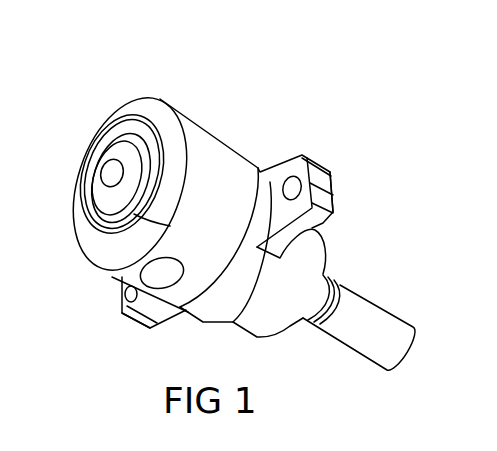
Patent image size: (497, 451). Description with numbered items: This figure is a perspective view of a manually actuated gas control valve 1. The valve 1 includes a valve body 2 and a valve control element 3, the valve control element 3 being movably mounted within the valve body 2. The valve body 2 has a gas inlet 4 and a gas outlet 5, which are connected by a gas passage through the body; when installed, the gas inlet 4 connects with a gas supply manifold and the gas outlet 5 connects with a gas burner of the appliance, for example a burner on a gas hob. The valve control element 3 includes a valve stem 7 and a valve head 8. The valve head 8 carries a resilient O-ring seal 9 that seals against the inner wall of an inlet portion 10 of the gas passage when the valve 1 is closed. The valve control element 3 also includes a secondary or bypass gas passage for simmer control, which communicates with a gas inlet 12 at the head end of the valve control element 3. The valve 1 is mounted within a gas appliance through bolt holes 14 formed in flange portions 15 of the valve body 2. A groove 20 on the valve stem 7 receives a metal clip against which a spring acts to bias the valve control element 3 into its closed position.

The manually actuated gas control valve 1 is at (163, 72).
The valve body 2 is at (212, 143).
The valve control element 3 is at (307, 352).
The gas inlet 4 is at (112, 123).
The gas outlet 5 is at (158, 272).
The valve stem 7 is at (384, 326).
The valve head 8 is at (95, 190).
The resilient O-ring seal 9 is at (103, 213).
The inlet portion 10 is at (137, 212).
The gas inlet 12 is at (108, 170).
The bolt holes 14 is at (293, 178).
The flange portions 15 is at (326, 184).
The groove 20 is at (340, 290).